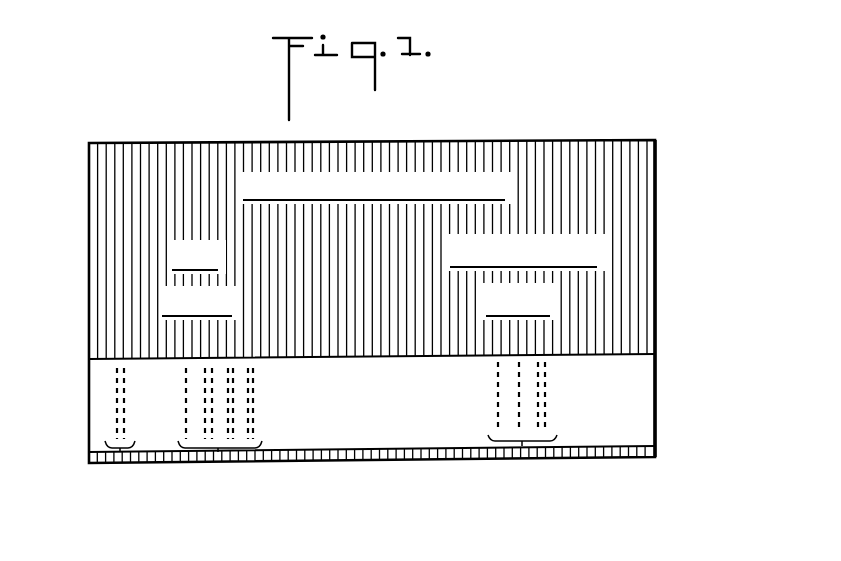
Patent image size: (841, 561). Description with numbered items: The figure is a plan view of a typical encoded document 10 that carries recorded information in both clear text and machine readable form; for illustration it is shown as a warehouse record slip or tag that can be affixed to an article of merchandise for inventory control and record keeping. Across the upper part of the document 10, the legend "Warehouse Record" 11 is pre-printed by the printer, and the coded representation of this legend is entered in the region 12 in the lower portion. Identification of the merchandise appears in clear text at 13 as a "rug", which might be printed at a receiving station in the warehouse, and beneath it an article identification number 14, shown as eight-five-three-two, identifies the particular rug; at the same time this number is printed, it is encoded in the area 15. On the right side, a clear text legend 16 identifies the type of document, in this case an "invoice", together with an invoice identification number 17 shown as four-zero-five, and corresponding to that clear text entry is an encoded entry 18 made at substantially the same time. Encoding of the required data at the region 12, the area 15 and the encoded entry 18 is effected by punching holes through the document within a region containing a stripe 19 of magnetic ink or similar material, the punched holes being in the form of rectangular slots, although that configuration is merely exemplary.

The document 10 is at (668, 155).
The legend "Warehouse Record" 11 is at (517, 187).
The region 12 is at (121, 450).
The clear text merchandise identification 13 is at (158, 252).
The article identification number 14 is at (157, 301).
The area 15 is at (218, 450).
The clear text legend 16 is at (607, 252).
The invoice identification number 17 is at (558, 300).
The encoded entry 18 is at (522, 446).
The stripe 19 is at (643, 401).